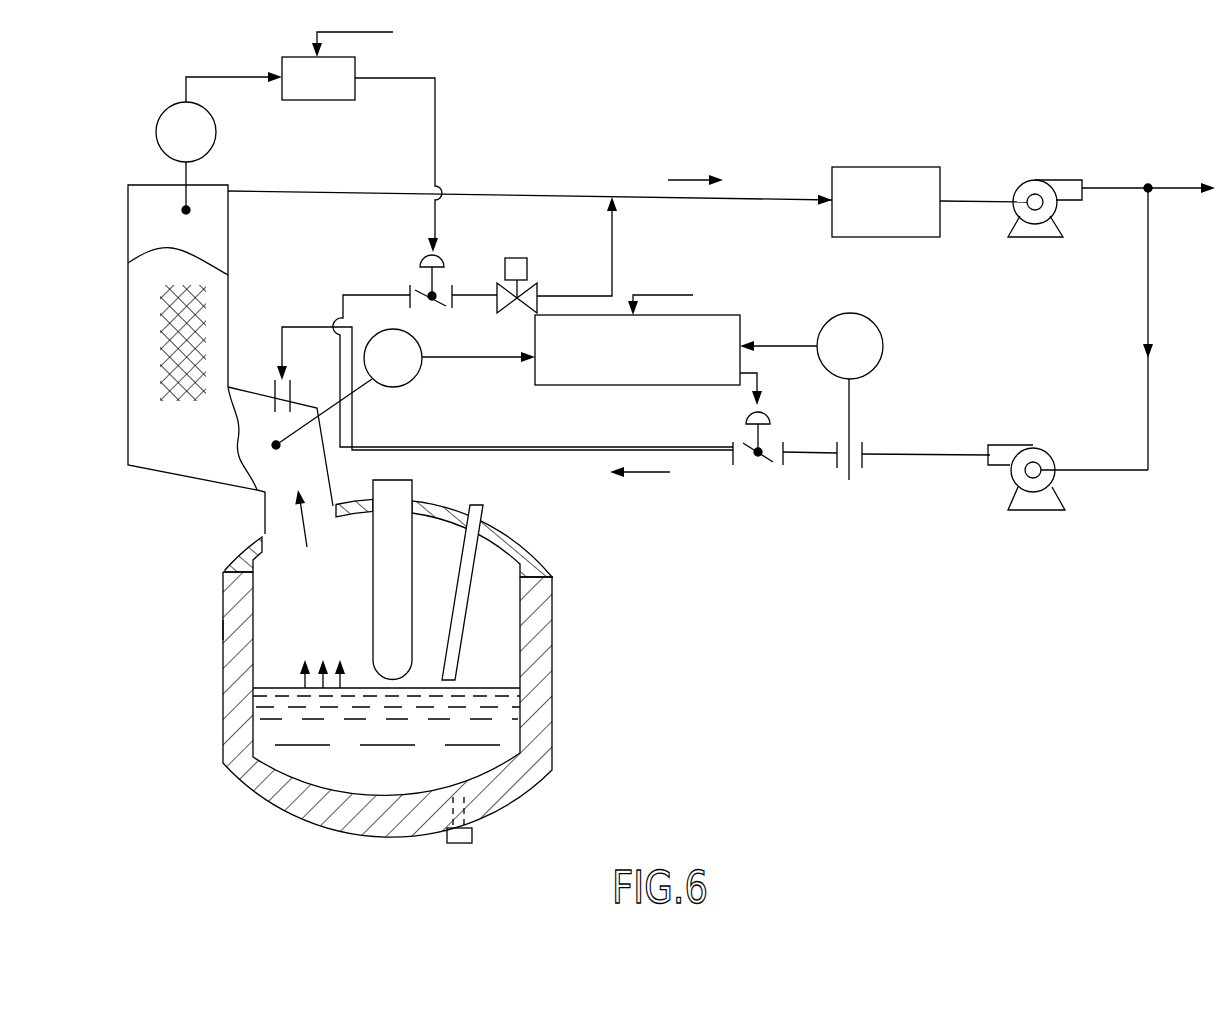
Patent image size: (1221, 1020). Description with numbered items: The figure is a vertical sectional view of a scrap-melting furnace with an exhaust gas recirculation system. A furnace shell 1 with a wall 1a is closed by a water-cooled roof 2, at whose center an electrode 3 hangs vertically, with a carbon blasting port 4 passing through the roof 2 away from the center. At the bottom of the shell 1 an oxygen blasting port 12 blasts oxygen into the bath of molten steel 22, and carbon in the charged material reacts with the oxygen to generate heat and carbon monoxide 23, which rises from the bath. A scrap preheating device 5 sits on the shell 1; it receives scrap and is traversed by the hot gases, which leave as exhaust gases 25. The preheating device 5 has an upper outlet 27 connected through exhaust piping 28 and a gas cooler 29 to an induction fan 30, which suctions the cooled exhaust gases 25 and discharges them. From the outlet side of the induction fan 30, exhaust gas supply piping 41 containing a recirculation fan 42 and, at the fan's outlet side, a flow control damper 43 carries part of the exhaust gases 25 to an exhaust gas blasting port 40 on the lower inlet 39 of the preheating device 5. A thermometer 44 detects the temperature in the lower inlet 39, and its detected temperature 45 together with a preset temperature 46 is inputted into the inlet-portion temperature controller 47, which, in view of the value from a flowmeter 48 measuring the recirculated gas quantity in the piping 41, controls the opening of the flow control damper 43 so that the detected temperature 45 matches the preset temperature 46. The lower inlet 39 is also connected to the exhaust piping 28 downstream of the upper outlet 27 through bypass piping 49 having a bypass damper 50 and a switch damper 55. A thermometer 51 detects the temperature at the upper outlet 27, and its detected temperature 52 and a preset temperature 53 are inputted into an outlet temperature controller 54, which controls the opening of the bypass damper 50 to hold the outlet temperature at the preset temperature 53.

The furnace shell 1 is at (570, 729).
The vessel wall 1a is at (236, 632).
The water-cooled roof 2 is at (522, 546).
The electrode 3 is at (373, 480).
The carbon blasting port 4 is at (471, 505).
The scrap preheating device 5 is at (104, 368).
The oxygen blasting port 12 is at (472, 832).
The molten steel 22 is at (286, 740).
The carbon monoxide 23 is at (300, 680).
The exhaust gases 25 is at (266, 532).
The upper outlet 27 is at (127, 203).
The exhaust piping 28 is at (576, 196).
The gas cooler 29 is at (885, 167).
The induction fan 30 is at (1038, 178).
The lower inlet 39 is at (256, 492).
The exhaust gas blasting port 40 is at (274, 380).
The exhaust gas supply piping 41 is at (925, 455).
The recirculation fan 42 is at (1025, 510).
The flow control damper 43 is at (758, 466).
The thermometer 44 is at (413, 374).
The detected temperature 45 is at (523, 362).
The preset temperature 46 is at (657, 294).
The inlet-portion temperature controller 47 is at (733, 313).
The flowmeter 48 is at (883, 346).
The bypass piping 49 is at (362, 290).
The bypass damper 50 is at (412, 282).
The thermometer 51 is at (156, 130).
The detected temperature 52 is at (222, 72).
The preset temperature 53 is at (380, 33).
The outlet temperature controller 54 is at (317, 100).
The switch damper 55 is at (527, 264).